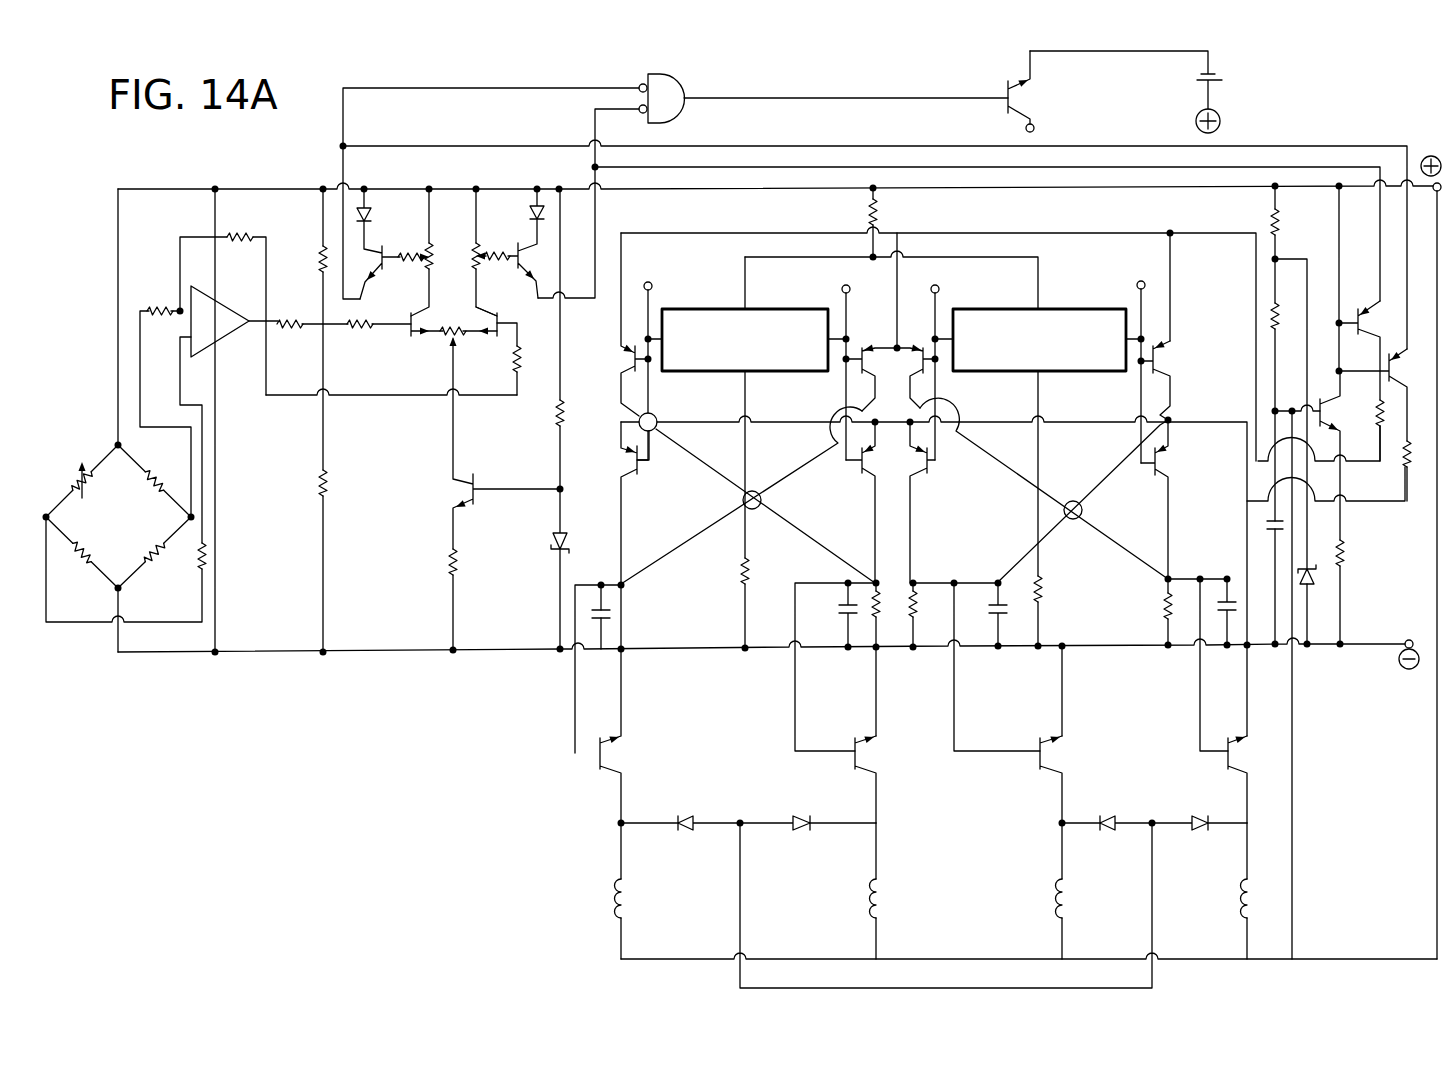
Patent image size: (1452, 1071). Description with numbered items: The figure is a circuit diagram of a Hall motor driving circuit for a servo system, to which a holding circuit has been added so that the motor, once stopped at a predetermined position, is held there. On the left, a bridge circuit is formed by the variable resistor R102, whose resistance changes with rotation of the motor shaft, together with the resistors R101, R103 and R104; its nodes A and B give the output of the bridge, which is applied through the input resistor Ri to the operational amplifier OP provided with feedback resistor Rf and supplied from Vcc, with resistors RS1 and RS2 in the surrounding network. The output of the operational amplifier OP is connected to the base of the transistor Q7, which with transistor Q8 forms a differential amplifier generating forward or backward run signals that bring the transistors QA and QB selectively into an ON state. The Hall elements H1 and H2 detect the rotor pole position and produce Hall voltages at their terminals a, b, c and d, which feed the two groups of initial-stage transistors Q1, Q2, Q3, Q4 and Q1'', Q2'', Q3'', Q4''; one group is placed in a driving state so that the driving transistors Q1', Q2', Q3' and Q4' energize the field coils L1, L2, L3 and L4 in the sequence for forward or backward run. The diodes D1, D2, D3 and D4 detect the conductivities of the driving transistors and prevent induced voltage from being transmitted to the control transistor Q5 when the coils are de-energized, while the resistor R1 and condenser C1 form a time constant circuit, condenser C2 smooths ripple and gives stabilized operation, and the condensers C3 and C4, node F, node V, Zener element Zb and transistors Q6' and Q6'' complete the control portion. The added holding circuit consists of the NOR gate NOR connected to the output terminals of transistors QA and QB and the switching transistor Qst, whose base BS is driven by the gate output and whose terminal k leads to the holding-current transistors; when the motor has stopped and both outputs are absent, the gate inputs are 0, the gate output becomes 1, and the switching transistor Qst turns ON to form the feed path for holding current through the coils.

The NOR gate NOR is at (681, 112).
The switching transistor Qst is at (1018, 96).
The base of starting transistor BS is at (975, 78).
The terminal k is at (1044, 127).
The supply voltage Vcc is at (304, 202).
The feedback resistor Rf is at (240, 248).
The input resistor Ri is at (159, 296).
The operational amplifier OP is at (220, 321).
The resistor RS1 is at (305, 259).
The resistor RS2 is at (344, 482).
The resistor R101 is at (158, 477).
The variable resistor R102 is at (82, 473).
The resistor R103 is at (82, 553).
The resistor R104 is at (162, 552).
The bridge node A is at (61, 515).
The bridge node B is at (175, 517).
The transistor QA is at (376, 280).
The transistor QB is at (526, 280).
The transistor Q7 is at (498, 337).
The transistor Q8 is at (410, 337).
The Hall element H1 is at (709, 308).
The Hall element H2 is at (1093, 308).
The Hall output terminal a is at (644, 357).
The Hall output terminal b is at (844, 357).
The Hall output terminal c is at (933, 357).
The Hall output terminal d is at (1139, 356).
The transistor Q1 is at (613, 324).
The transistor Q2 is at (867, 363).
The transistor Q3 is at (916, 361).
The transistor Q4 is at (1177, 380).
The transistor Q1'' is at (613, 503).
The transistor Q2'' is at (865, 502).
The transistor Q3'' is at (927, 502).
The transistor Q4'' is at (1186, 499).
The driving transistor Q1' is at (636, 703).
The driving transistor Q2' is at (891, 778).
The driving transistor Q3' is at (1077, 778).
The driving transistor Q4' is at (1262, 778).
The condenser C1 is at (929, 633).
The condenser C2 is at (837, 667).
The capacitor C3 is at (974, 667).
The capacitor C4 is at (1212, 665).
The diode D1 is at (684, 830).
The diode D2 is at (803, 830).
The diode D3 is at (1106, 830).
The diode D4 is at (1200, 830).
The field coil L1 is at (628, 895).
The field coil L2 is at (883, 895).
The field coil L3 is at (1069, 895).
The field coil L4 is at (1240, 895).
The resistor R1 is at (1290, 314).
The node F is at (1261, 406).
The node V is at (1261, 656).
The zener diode Zb is at (1318, 587).
The control transistor Q5 is at (1320, 400).
The transistor Q6' is at (1361, 364).
The transistor Q6'' is at (1391, 412).
The logic level 0 is at (604, 97).
The output logic level 1 is at (710, 74).